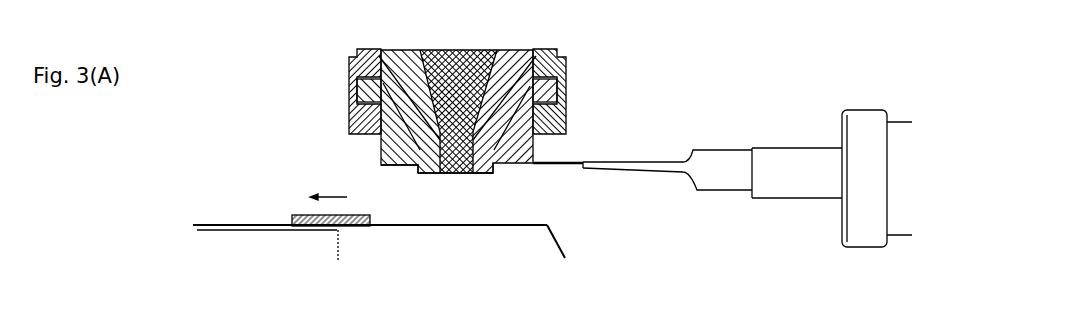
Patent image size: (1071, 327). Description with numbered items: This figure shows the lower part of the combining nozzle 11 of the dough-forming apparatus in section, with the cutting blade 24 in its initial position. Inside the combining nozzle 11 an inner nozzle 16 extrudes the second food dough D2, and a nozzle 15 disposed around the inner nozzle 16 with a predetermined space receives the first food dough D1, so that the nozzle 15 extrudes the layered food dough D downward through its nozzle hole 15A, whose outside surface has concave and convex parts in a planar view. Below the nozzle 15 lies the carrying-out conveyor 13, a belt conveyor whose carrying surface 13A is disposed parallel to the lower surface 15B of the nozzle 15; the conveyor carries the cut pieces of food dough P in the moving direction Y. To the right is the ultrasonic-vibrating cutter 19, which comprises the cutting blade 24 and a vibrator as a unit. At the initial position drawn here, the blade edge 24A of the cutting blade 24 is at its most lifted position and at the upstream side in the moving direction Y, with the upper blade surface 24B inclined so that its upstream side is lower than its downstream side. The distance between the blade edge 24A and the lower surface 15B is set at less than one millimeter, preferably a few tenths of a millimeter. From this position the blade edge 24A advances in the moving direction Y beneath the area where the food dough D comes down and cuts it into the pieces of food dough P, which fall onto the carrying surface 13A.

The combining nozzle 11 is at (578, 72).
The carrying-out conveyor 13 is at (257, 250).
The carrying surface 13A is at (240, 223).
The nozzle 15 is at (383, 147).
The nozzle hole 15A is at (470, 175).
The lower surface 15B is at (410, 167).
The inner nozzle 16 is at (493, 50).
The ultrasonic-vibrating cutter 19 is at (862, 108).
The cutting blade 24 is at (700, 158).
The blade edge 24A is at (512, 165).
The upper blade surface 24B is at (583, 161).
The food dough D is at (432, 175).
The first food dough D1 is at (400, 50).
The second food dough D2 is at (468, 50).
The pieces of food dough P is at (293, 203).
The moving direction Y is at (337, 196).